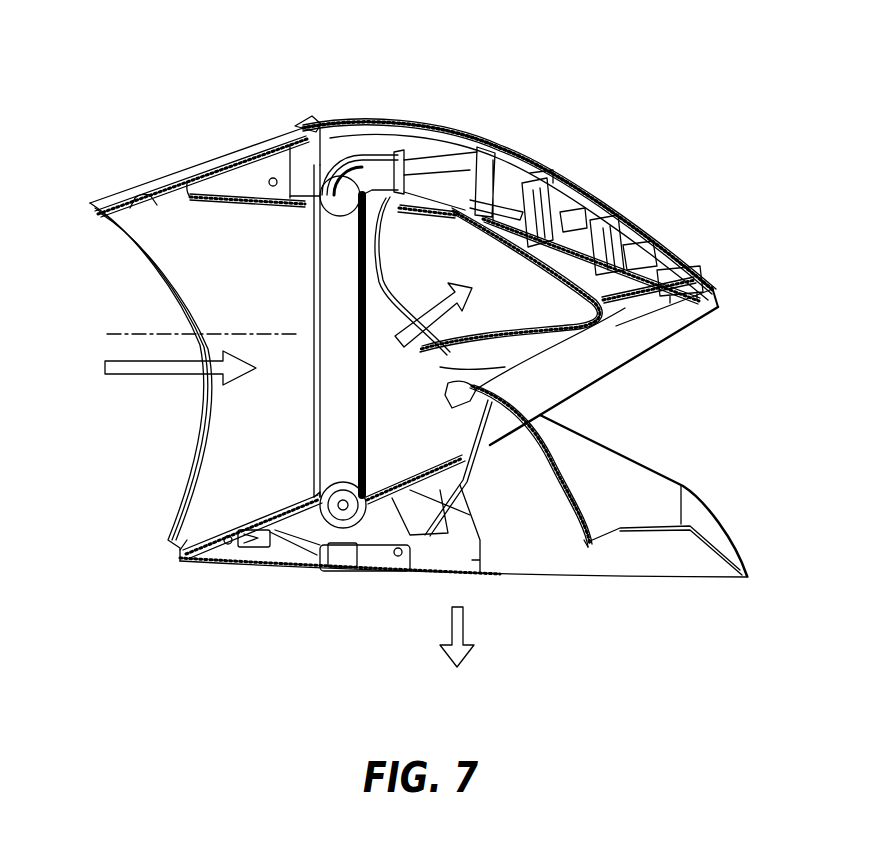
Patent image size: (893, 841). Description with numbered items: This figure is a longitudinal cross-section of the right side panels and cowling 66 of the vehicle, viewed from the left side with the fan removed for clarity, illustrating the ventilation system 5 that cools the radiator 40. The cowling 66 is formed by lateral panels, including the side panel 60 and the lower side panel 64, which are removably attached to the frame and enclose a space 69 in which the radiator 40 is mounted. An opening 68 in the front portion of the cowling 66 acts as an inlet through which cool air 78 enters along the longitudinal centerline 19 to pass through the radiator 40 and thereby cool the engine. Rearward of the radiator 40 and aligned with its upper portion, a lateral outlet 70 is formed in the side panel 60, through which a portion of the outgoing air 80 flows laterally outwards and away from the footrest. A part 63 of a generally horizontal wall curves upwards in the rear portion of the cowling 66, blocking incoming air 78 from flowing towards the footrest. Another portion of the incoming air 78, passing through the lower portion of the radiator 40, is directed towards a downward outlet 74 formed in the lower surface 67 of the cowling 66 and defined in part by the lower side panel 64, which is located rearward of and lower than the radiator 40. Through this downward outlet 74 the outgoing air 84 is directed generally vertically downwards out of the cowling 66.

The ventilation system 5 is at (160, 70).
The central axis 19 is at (117, 334).
The radiator 40 is at (333, 245).
The side panel 60 is at (350, 148).
The part of the wall 63 is at (557, 207).
The lower side panel 64 is at (570, 575).
The cowling 66 is at (420, 150).
The lower surface of the cowling 67 is at (658, 577).
The opening (inlet) 68 is at (283, 263).
The space 69 is at (505, 367).
The lateral outlet 70 is at (522, 305).
The downward outlet 74 is at (540, 570).
The cool air (incoming air) 78 is at (133, 374).
The outgoing air 80 is at (457, 287).
The outgoing air 84 is at (447, 638).